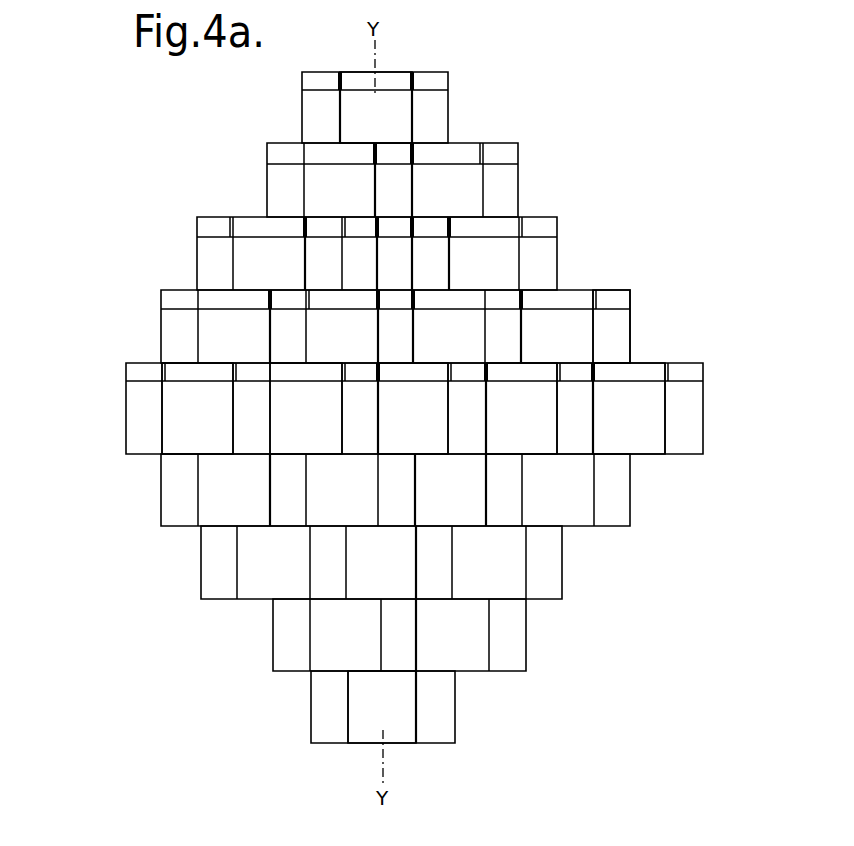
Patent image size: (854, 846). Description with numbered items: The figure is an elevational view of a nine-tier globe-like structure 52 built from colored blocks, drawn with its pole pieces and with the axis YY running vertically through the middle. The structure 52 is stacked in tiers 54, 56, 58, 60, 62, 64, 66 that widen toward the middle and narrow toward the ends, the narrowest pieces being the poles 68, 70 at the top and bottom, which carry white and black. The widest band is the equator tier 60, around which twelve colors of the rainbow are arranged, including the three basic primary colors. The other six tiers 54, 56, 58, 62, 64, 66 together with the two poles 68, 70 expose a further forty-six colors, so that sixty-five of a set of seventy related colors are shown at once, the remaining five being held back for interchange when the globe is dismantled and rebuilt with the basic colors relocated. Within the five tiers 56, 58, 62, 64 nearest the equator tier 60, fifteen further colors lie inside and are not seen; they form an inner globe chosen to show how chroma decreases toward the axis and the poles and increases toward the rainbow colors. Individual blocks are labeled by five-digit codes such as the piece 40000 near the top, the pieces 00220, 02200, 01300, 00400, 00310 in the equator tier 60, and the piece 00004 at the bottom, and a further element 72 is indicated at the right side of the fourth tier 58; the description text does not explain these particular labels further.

The globe-like structure 52 is at (641, 204).
The tier 54 is at (251, 181).
The tier 56 is at (181, 258).
The tier 58 is at (144, 330).
The equator tier 60 is at (110, 404).
The tier 62 is at (147, 490).
The tier 64 is at (183, 567).
The tier 66 is at (247, 638).
The pole 68 is at (448, 102).
The pole 70 is at (450, 712).
The end cell of fourth row 72 is at (630, 313).
The cell 40000 is at (358, 117).
The cell 00220 is at (643, 408).
The cell 02200 is at (197, 430).
The cell 01300 is at (312, 427).
The cell 00400 is at (420, 418).
The cell 00310 is at (517, 417).
The cell 00004 is at (363, 721).